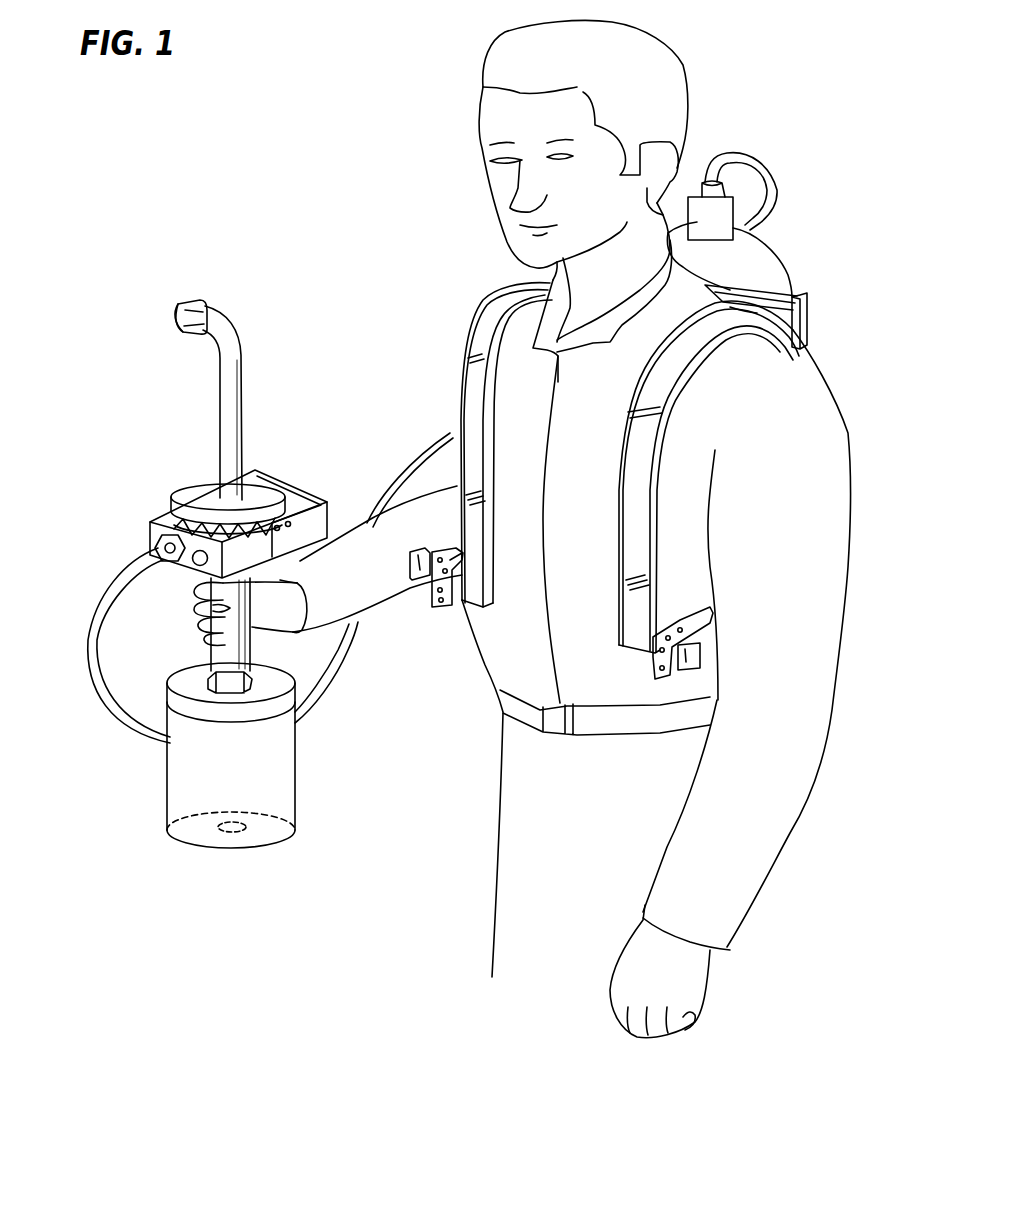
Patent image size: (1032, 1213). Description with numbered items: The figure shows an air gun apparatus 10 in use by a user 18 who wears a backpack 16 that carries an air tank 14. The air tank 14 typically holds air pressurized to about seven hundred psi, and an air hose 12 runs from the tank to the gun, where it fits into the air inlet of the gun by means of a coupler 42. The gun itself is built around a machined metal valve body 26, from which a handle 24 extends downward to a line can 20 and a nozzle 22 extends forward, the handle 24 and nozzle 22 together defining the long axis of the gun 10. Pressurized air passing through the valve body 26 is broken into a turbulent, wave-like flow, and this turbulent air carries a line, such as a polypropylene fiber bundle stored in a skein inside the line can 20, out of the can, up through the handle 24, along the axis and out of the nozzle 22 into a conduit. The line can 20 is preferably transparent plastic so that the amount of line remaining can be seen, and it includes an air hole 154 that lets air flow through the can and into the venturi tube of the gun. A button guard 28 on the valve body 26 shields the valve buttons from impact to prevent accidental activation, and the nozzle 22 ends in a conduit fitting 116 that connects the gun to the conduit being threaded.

The air gun apparatus 10 is at (101, 544).
The air hose 12 is at (417, 452).
The air tank 14 is at (777, 253).
The backpack 16 is at (816, 325).
The user 18 is at (508, 674).
The line can 20 is at (280, 783).
The nozzle 22 is at (243, 362).
The handle 24 is at (262, 638).
The valve body 26 is at (165, 511).
The button guard 28 is at (280, 481).
The coupler 42 is at (167, 572).
The conduit fitting 116 is at (186, 303).
The air hole 154 is at (245, 838).